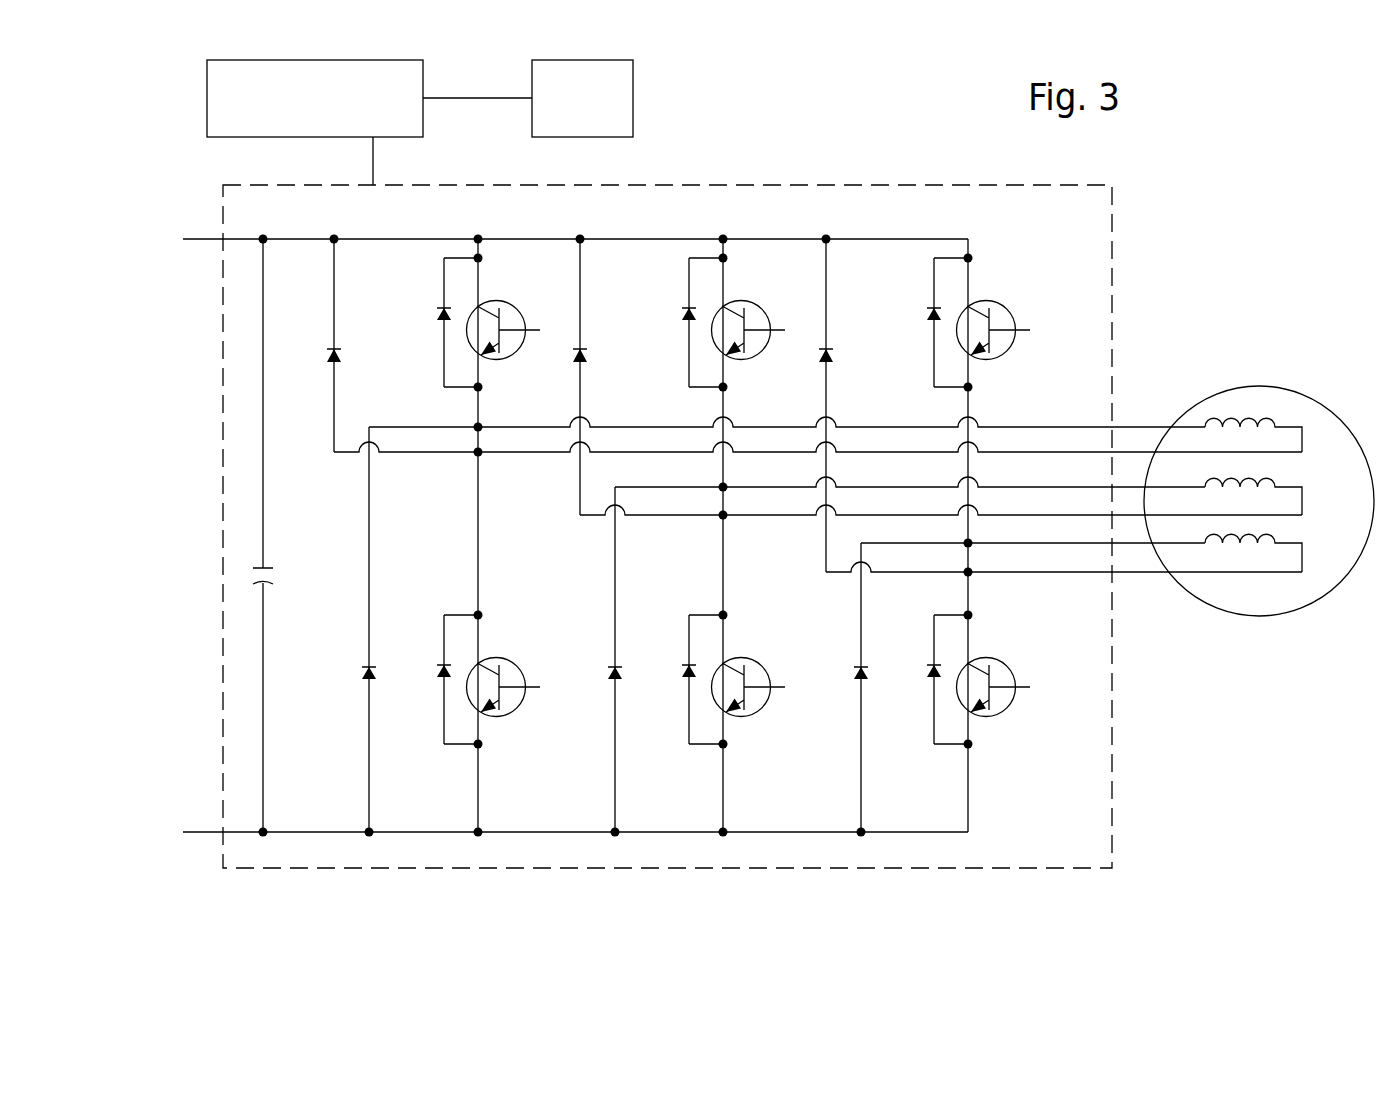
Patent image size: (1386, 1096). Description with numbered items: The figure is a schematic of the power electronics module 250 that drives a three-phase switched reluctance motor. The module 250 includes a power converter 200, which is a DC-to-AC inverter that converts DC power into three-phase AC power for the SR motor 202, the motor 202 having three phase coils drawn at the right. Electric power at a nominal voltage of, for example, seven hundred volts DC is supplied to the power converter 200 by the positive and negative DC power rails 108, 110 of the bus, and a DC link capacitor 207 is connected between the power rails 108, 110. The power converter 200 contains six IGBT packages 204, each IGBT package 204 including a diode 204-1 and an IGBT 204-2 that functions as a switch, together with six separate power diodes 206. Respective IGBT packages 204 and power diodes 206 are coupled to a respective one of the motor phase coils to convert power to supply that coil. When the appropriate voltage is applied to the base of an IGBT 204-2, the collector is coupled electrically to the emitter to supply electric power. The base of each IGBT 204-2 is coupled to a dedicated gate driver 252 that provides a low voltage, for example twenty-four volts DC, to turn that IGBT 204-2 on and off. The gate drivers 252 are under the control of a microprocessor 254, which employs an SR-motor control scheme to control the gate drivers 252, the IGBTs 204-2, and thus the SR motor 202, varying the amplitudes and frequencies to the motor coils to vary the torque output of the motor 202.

The positive DC power rail 108 is at (197, 239).
The negative DC power rail 110 is at (197, 835).
The power converter 200 is at (790, 223).
The three-phase SR motor 202 is at (1353, 507).
The IGBT package 204 is at (453, 358).
The diode 204-1 is at (438, 312).
The IGBT 204-2 is at (502, 358).
The power diode 206 is at (328, 358).
The DC link capacitor 207 is at (266, 570).
The power electronics module 250 is at (817, 111).
The gate driver 252 is at (207, 96).
The microprocessor 254 is at (633, 83).